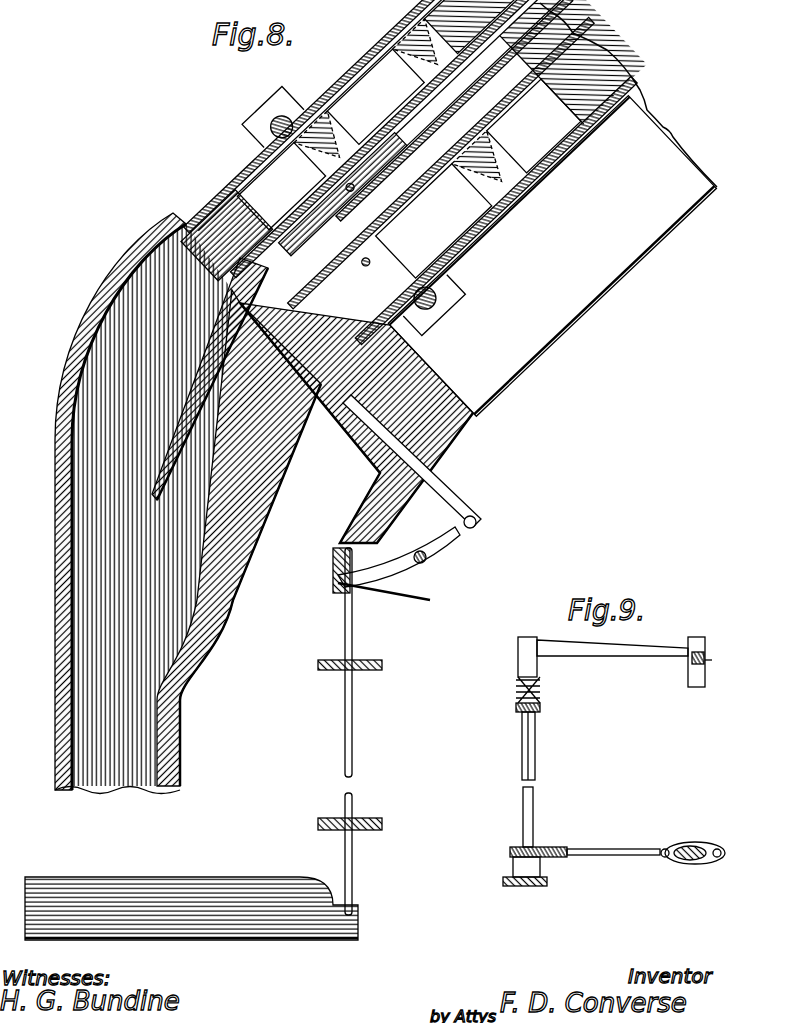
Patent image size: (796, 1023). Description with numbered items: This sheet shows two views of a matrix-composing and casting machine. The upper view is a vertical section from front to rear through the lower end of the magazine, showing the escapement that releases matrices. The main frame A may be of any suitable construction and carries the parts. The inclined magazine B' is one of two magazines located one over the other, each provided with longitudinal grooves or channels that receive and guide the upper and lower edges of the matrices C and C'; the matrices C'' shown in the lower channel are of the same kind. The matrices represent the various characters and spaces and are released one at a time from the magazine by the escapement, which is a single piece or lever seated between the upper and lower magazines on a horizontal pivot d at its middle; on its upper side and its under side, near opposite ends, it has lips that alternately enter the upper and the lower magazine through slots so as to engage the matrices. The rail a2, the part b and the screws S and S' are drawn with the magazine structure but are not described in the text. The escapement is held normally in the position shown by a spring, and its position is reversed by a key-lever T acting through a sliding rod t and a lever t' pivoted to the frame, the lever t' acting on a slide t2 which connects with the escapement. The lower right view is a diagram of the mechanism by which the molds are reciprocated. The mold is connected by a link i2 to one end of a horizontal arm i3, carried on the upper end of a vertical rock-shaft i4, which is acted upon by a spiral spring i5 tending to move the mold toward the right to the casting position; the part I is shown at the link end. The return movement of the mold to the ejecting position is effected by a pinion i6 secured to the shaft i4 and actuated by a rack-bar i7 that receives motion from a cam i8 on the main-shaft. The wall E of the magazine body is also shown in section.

In FIG. 8, the wall E is at (188, 503).
In FIG. 8, the main frame A is at (552, 256).
In FIG. 8, the inclined magazine B' is at (608, 93).
In FIG. 8, the matrices C is at (330, 139).
In FIG. 8, the matrices C' is at (426, 138).
In FIG. 8, the block C'' is at (434, 221).
In FIG. 8, the rail a2 is at (475, 125).
In FIG. 8, the horizontal pivot d is at (370, 228).
In FIG. 8, the pin b is at (388, 277).
In FIG. 8, the screw S is at (262, 119).
In FIG. 8, the screw S' is at (447, 306).
In FIG. 8, the slide t2 is at (430, 500).
In FIG. 8, the lever t' is at (399, 570).
In FIG. 8, the sliding rod t is at (350, 731).
In FIG. 8, the key-lever T is at (222, 880).
In FIG. 9, the bracket I is at (705, 672).
In FIG. 9, the link i2 is at (705, 648).
In FIG. 9, the horizontal arm i3 is at (600, 655).
In FIG. 9, the vertical rock-shaft i4 is at (537, 745).
In FIG. 9, the spiral spring i5 is at (516, 692).
In FIG. 9, the pinion i6 is at (540, 847).
In FIG. 9, the rack-bar i7 is at (575, 848).
In FIG. 9, the cam i8 is at (698, 843).